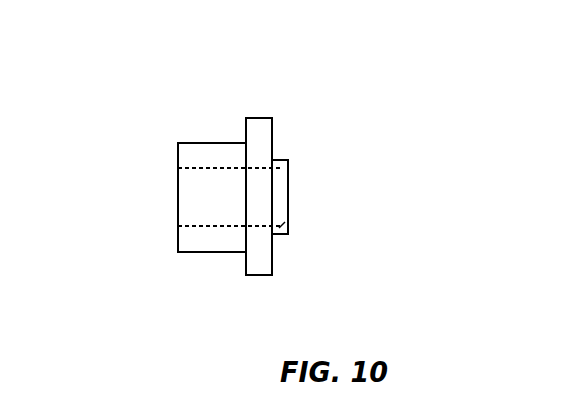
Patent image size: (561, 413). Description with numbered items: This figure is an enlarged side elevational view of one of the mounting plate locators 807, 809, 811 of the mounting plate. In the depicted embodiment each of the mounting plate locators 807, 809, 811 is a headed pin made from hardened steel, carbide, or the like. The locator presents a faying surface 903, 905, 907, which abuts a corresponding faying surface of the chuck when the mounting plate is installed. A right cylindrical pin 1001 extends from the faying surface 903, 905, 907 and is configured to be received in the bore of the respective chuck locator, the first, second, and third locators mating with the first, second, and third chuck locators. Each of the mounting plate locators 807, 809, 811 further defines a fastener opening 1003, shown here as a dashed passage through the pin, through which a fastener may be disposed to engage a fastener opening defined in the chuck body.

The mounting plate locator 807 is at (169, 145).
The mounting plate locator 809 is at (169, 145).
The mounting plate locator 811 is at (247, 94).
The faying surface 903 is at (184, 228).
The faying surface 905 is at (184, 228).
The faying surface 907 is at (272, 262).
The right cylindrical pin 1001 is at (288, 160).
The fastener opening 1003 is at (287, 215).